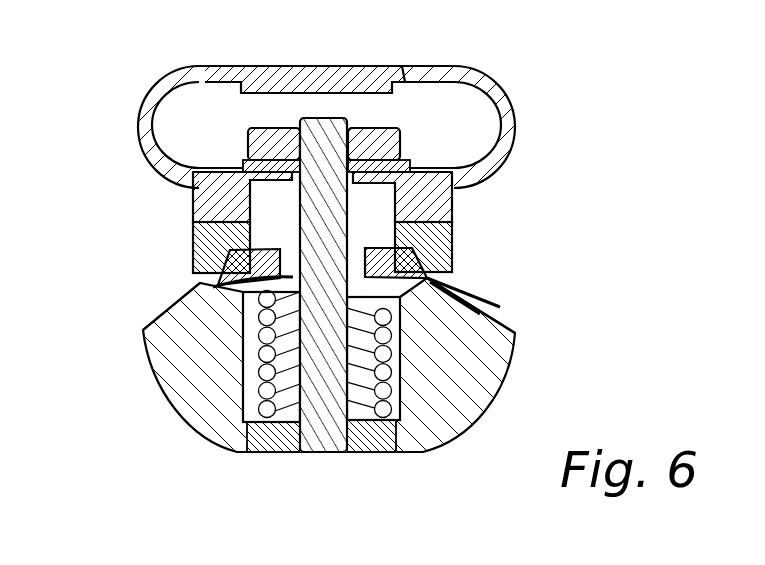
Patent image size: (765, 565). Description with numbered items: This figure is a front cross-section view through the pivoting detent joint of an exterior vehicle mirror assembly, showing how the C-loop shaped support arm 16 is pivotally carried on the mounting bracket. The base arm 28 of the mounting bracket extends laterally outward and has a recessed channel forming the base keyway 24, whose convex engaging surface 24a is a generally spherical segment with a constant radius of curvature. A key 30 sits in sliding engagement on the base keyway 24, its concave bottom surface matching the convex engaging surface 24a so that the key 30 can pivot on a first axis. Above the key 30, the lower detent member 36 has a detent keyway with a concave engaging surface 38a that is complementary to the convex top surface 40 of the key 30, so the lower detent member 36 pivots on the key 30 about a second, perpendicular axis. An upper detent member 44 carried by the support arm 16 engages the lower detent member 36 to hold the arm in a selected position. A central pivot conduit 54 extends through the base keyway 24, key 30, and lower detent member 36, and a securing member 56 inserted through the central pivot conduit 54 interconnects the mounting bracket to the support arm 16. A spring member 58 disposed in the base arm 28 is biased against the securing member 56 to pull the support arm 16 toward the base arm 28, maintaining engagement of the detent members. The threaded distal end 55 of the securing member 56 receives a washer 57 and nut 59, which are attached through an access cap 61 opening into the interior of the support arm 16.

The support arm 16 is at (487, 78).
The access cap 61 is at (323, 72).
The distal end 55 is at (320, 133).
The nut 59 is at (250, 133).
The washer 57 is at (237, 167).
The central pivot conduit 54 is at (365, 201).
The upper detent member 44 is at (457, 207).
The concave engaging surface 38a is at (193, 235).
The lower detent member 36 is at (450, 255).
The convex top surface 40 is at (265, 248).
The key 30 is at (433, 280).
The base keyway 24 is at (196, 282).
The convex engaging surface 24a is at (487, 322).
The base arm 28 is at (473, 370).
The spring member 58 is at (385, 408).
The securing member 56 is at (323, 428).